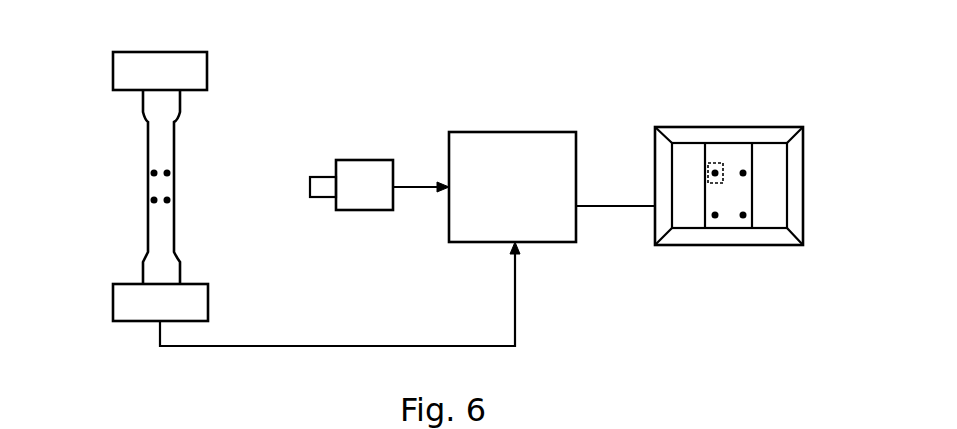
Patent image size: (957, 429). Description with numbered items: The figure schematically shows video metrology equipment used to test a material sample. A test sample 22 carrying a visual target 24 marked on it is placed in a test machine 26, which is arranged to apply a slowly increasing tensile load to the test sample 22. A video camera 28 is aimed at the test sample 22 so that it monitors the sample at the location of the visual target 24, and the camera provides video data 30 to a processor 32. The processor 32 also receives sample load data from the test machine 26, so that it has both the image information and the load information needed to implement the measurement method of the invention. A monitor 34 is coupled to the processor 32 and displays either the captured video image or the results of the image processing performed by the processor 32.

The test sample 22 is at (155, 117).
The visual target 24 is at (153, 189).
The test machine 26 is at (123, 75).
The video camera 28 is at (363, 168).
The video data 30 is at (425, 189).
The processor 32 is at (533, 141).
The monitor 34 is at (720, 183).